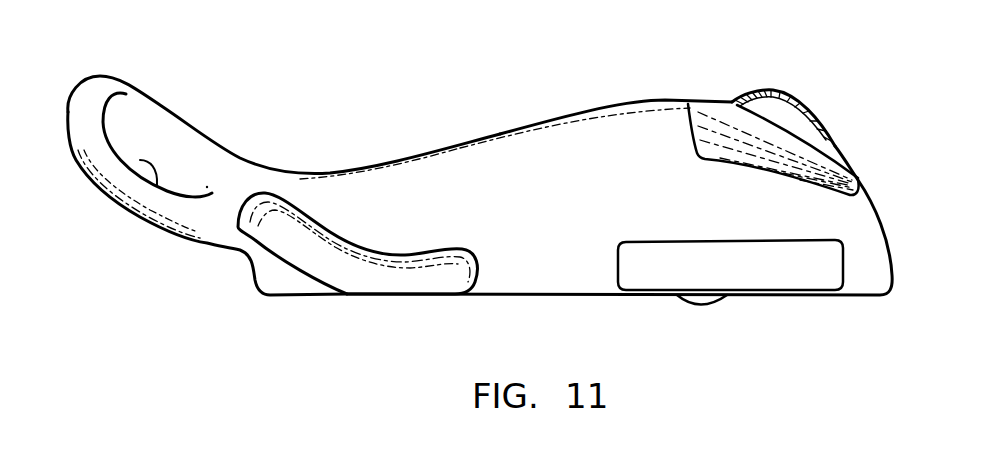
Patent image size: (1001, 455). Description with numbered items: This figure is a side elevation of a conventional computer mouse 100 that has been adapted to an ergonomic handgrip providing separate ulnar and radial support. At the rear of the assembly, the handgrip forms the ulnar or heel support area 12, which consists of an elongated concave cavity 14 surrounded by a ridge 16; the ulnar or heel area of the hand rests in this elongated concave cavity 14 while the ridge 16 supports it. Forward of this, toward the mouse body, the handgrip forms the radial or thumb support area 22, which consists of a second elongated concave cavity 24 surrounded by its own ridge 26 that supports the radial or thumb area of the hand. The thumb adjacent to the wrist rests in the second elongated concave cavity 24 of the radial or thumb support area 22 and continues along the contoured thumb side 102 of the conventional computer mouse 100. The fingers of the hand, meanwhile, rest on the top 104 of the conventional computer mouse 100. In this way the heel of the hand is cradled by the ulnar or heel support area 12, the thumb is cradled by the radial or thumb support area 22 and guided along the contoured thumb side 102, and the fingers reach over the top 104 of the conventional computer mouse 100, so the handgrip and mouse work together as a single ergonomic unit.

The ulnar or heel support area 12 is at (89, 60).
The ridge 16 is at (102, 86).
The elongated concave cavity 14 is at (157, 185).
The ridge 26 is at (265, 193).
The second elongated concave cavity 24 is at (365, 246).
The radial or thumb support area 22 is at (343, 205).
The top 104 is at (545, 122).
The contoured thumb side 102 is at (590, 228).
The conventional computer mouse 100 is at (822, 82).